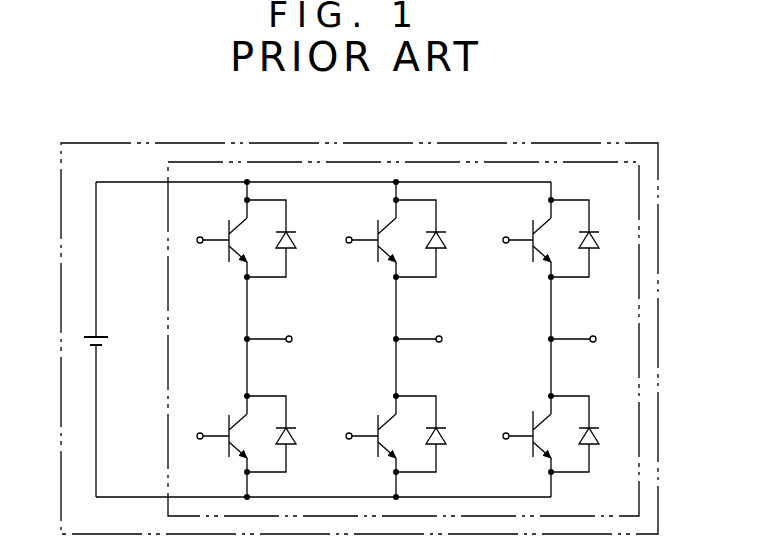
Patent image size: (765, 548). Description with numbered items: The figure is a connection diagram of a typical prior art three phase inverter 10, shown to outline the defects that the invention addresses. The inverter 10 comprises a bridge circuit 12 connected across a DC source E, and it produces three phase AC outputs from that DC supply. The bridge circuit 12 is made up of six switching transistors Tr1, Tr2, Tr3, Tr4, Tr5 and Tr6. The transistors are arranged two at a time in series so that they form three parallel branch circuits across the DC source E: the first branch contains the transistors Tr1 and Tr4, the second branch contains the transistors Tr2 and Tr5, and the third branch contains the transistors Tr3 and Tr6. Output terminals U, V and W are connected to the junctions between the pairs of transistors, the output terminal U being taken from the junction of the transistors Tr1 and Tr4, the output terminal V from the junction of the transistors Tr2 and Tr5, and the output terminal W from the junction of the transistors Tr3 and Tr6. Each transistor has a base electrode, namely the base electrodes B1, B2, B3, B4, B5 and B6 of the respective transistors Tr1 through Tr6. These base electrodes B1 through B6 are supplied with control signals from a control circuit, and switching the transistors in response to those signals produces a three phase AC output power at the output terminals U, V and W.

The three phase inverter 10 is at (485, 143).
The bridge circuit 12 is at (278, 162).
The DC source E is at (108, 341).
The output terminal U is at (279, 341).
The output terminal V is at (428, 341).
The output terminal W is at (586, 341).
The switching transistor Tr1 is at (229, 222).
The switching transistor Tr2 is at (378, 222).
The switching transistor Tr3 is at (533, 222).
The switching transistor Tr4 is at (229, 418).
The switching transistor Tr5 is at (378, 418).
The switching transistor Tr6 is at (533, 416).
The base electrode B1 is at (200, 243).
The base electrode B2 is at (349, 243).
The base electrode B3 is at (506, 243).
The base electrode B4 is at (200, 439).
The base electrode B5 is at (349, 439).
The base electrode B6 is at (506, 439).